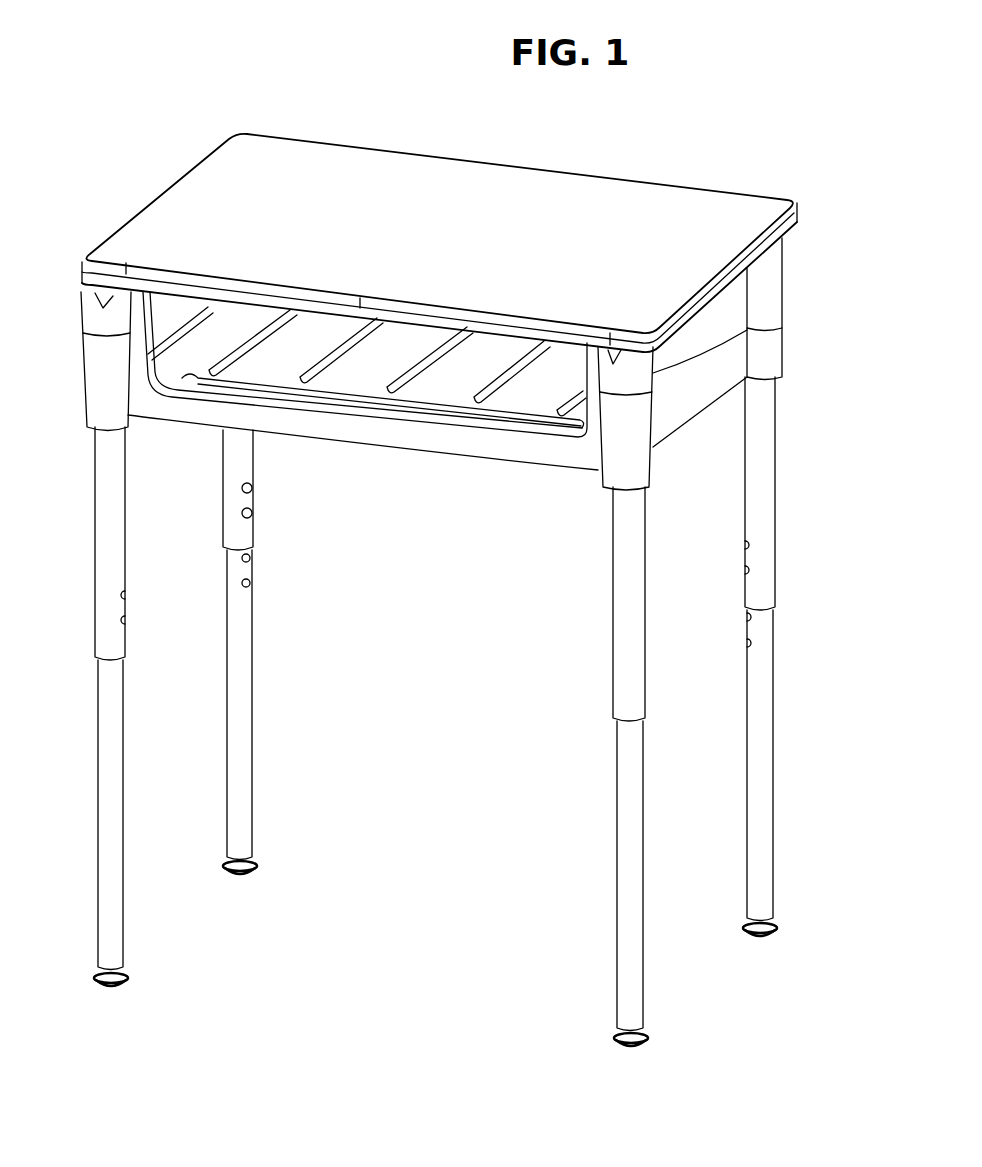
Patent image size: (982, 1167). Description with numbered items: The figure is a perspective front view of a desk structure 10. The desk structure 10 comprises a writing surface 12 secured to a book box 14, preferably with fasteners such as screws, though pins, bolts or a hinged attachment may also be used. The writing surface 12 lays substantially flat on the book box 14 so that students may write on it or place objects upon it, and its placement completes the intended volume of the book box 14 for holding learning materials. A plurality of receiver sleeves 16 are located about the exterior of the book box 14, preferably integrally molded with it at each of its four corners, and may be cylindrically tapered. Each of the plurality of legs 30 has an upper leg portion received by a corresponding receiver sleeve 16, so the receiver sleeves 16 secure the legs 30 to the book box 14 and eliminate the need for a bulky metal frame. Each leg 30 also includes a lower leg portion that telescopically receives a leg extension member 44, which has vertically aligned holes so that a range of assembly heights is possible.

The desk structure 10 is at (153, 76).
The writing surface 12 is at (280, 160).
The book box 14 is at (715, 318).
The receiver sleeve 16 is at (107, 373).
The leg 30 is at (760, 503).
The leg extension member 44 is at (770, 790).